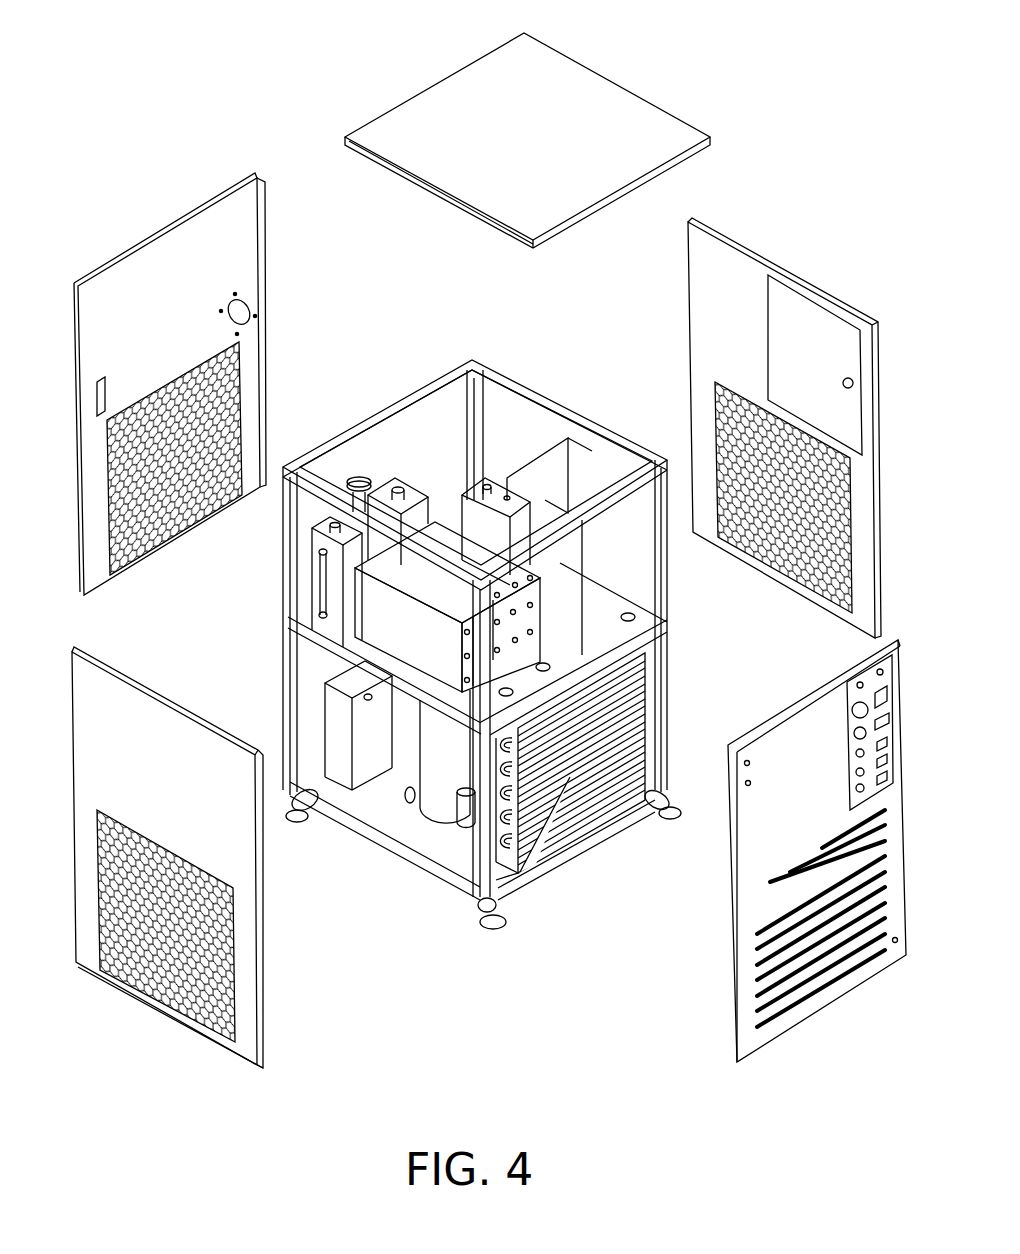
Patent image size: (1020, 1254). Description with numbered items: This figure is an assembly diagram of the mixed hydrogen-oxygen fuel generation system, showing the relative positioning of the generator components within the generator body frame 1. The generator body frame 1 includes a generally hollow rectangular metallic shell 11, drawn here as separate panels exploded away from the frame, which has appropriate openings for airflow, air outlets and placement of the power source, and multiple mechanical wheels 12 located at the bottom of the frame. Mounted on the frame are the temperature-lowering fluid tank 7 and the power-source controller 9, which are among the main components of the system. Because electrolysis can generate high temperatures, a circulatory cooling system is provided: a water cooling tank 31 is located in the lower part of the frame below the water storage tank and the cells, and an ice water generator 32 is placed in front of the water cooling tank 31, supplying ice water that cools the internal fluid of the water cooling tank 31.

The generator body frame 1 is at (370, 415).
The temperature-lowering fluid tank 7 is at (488, 478).
The power-source controller 9 is at (575, 490).
The hollow rectangular metallic shell 11 is at (622, 86).
The mechanical wheels 12 is at (477, 893).
The water cooling tank 31 is at (337, 682).
The ice water generator 32 is at (437, 815).